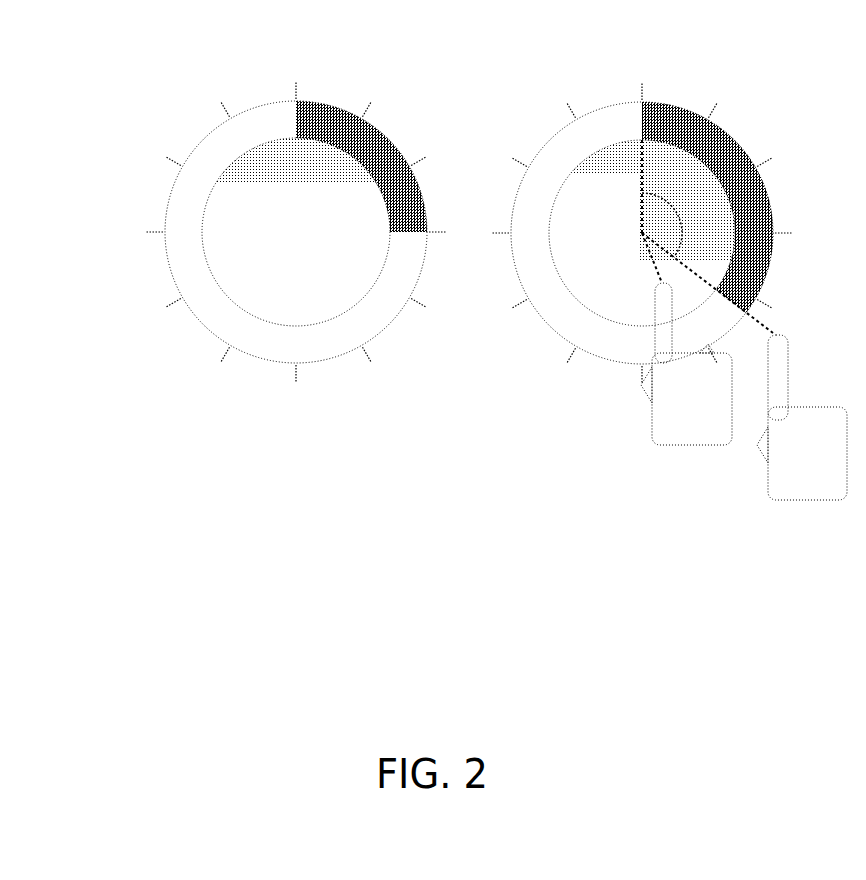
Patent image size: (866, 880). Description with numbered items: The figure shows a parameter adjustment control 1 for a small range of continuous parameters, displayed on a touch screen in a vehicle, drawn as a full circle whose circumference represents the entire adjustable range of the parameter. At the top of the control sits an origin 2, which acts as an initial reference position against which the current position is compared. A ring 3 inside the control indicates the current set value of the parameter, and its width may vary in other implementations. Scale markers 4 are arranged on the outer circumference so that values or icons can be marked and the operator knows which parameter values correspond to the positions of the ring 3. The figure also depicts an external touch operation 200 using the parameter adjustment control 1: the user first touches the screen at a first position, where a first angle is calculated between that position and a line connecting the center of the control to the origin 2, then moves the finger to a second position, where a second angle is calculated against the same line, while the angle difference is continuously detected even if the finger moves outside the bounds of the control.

The parameter adjustment control 1 is at (167, 207).
The origin 2 is at (296, 125).
The ring 3 is at (362, 165).
The scale markers 4 is at (176, 303).
The external touch operation 200 is at (572, 41).